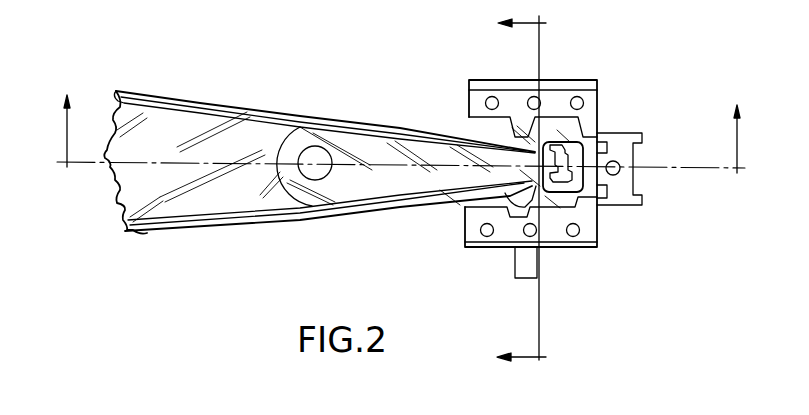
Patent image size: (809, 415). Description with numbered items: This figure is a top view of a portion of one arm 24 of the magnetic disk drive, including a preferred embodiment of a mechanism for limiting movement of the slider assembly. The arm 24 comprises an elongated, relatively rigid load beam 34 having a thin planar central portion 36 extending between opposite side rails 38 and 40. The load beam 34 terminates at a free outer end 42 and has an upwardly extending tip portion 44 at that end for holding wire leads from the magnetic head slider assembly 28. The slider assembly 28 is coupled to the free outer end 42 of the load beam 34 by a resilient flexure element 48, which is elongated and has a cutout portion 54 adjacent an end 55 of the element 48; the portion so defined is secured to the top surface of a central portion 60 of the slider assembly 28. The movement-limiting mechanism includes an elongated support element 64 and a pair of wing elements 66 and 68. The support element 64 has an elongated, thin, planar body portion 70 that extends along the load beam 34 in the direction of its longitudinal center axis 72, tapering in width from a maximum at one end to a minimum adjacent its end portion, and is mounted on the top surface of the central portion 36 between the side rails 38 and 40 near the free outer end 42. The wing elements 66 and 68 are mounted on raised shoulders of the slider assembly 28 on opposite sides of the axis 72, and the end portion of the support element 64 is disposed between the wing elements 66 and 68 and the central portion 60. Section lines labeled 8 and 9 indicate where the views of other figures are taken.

The section line 8- 8 is at (403, 110).
The section line 9- 9 is at (505, 190).
The arm 24 is at (201, 92).
The magnetic head slider assembly 28 is at (505, 80).
The load beam 34 is at (158, 92).
The thin planar central portion 36 is at (126, 203).
The side rail 38 is at (232, 221).
The side rail 40 is at (250, 106).
The free outer end 42 is at (470, 207).
The upwardly extending tip portion 44 is at (570, 148).
The resilient flexure element 48 is at (617, 188).
The cutout portion 54 is at (603, 188).
The end 55 is at (643, 138).
The central portion 60 is at (482, 124).
The elongated support element 64 is at (347, 188).
The wing element 66 is at (507, 238).
The wing element 68 is at (560, 100).
The body portion 70 is at (366, 142).
The longitudinal center axis 72 is at (172, 164).